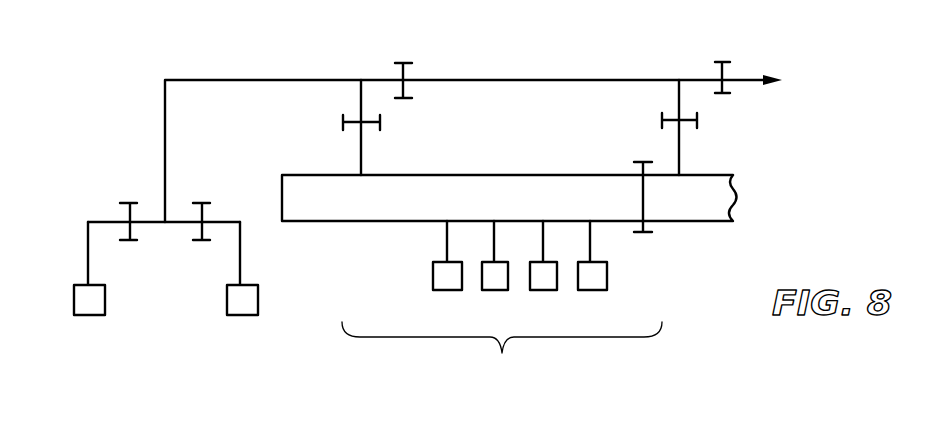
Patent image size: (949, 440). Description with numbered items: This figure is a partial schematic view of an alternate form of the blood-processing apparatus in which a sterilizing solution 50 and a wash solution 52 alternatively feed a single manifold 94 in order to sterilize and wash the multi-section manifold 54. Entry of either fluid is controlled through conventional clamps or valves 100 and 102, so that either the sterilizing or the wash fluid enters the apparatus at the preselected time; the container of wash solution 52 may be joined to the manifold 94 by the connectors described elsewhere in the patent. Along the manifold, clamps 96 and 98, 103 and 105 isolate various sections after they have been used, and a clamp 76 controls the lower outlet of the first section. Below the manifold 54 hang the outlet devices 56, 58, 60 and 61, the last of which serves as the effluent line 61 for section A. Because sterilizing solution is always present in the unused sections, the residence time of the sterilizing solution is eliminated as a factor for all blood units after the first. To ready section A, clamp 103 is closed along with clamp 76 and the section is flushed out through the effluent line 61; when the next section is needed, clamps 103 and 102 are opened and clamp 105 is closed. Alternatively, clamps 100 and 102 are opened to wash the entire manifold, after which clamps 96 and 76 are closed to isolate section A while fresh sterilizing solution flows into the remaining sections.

The sterilizing solution 50 is at (88, 310).
The wash solution 52 is at (240, 310).
The manifold 54 is at (533, 209).
The outlet device 56 is at (446, 285).
The outlet device 58 is at (494, 285).
The outlet device 60 is at (543, 285).
The effluent line 61 is at (592, 285).
The clamp 76 is at (647, 210).
The manifold 94 is at (295, 78).
The clamp 96 is at (372, 125).
The clamp 98 is at (687, 123).
The clamp or valve 100 is at (123, 212).
The clamp or valve 102 is at (207, 213).
The clamp 103 is at (407, 75).
The clamp 105 is at (727, 70).
The section A is at (502, 355).